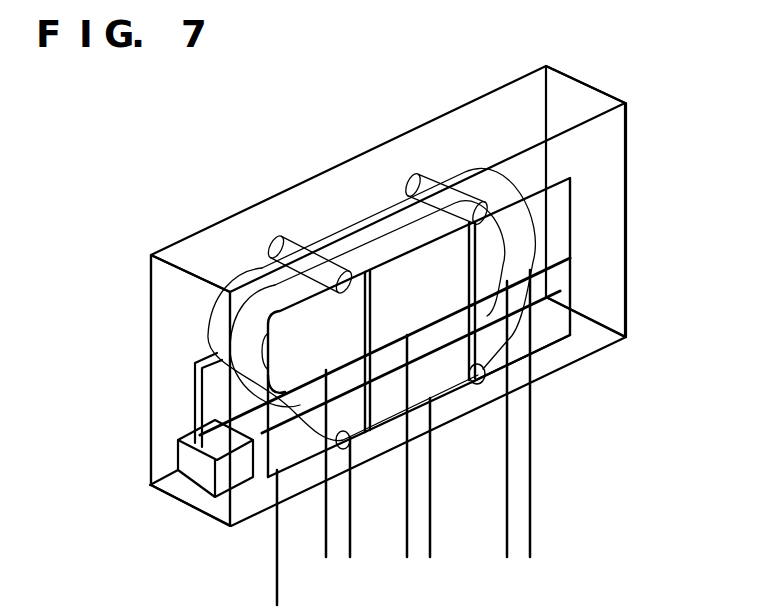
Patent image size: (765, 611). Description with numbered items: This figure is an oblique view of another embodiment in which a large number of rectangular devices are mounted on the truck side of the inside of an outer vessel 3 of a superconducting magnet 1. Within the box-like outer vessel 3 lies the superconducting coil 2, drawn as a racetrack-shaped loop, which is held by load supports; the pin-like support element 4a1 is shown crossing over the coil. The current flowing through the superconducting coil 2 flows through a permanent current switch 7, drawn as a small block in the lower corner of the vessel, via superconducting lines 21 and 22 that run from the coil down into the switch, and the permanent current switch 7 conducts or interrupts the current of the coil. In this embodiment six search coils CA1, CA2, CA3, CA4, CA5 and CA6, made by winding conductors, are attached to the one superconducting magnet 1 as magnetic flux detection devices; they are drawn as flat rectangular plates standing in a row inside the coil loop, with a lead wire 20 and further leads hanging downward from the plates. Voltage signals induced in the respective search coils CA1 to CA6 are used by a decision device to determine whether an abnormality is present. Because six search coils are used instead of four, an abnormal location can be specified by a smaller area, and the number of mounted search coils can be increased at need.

The superconducting magnet 1 is at (478, 115).
The superconducting coil 2 is at (178, 297).
The outer vessel 3 is at (607, 248).
The core pin 4a1 is at (254, 262).
The permanent current switch 7 is at (190, 467).
The lead wire 20 is at (275, 583).
The superconducting line 21 is at (193, 390).
The superconducting line 22 is at (202, 420).
The search coil CA1 is at (267, 347).
The search coil CA2 is at (574, 214).
The search coil CA3 is at (286, 473).
The search coil CA4 is at (550, 345).
The search coil CA5 is at (387, 260).
The search coil CA6 is at (447, 393).